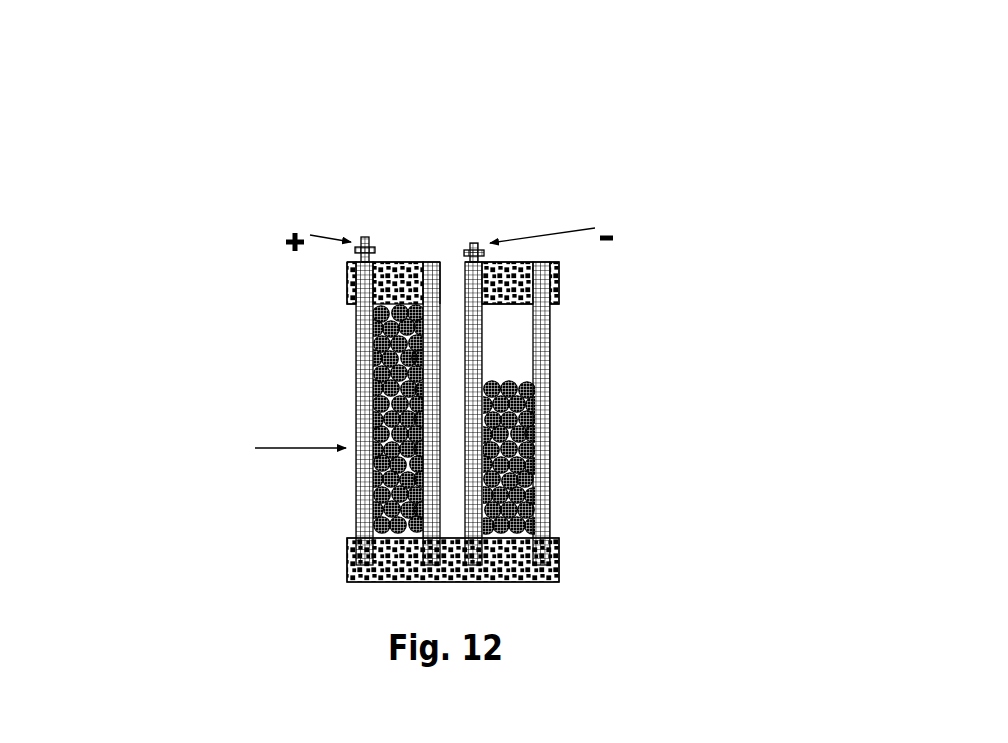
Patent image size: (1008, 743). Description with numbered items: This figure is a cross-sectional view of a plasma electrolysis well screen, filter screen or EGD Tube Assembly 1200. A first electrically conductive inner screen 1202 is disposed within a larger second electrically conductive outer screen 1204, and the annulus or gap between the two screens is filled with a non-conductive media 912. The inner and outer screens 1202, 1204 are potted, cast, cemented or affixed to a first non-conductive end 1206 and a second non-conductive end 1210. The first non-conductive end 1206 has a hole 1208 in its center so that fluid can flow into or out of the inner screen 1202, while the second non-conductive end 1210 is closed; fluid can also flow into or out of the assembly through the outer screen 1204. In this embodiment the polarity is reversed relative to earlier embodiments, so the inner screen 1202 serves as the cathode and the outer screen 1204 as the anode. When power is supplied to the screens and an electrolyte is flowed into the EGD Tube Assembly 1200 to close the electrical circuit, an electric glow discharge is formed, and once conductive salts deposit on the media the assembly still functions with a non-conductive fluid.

The EGD Tube Assembly 1200 is at (787, 148).
The first electrically conductive inner screen 1202 is at (488, 357).
The second electrically conductive outer screen 1204 is at (551, 481).
The first non-conductive end 1206 is at (561, 284).
The hole 1208 is at (453, 260).
The second non-conductive end 1210 is at (346, 562).
The non-conductive media 912 is at (400, 363).